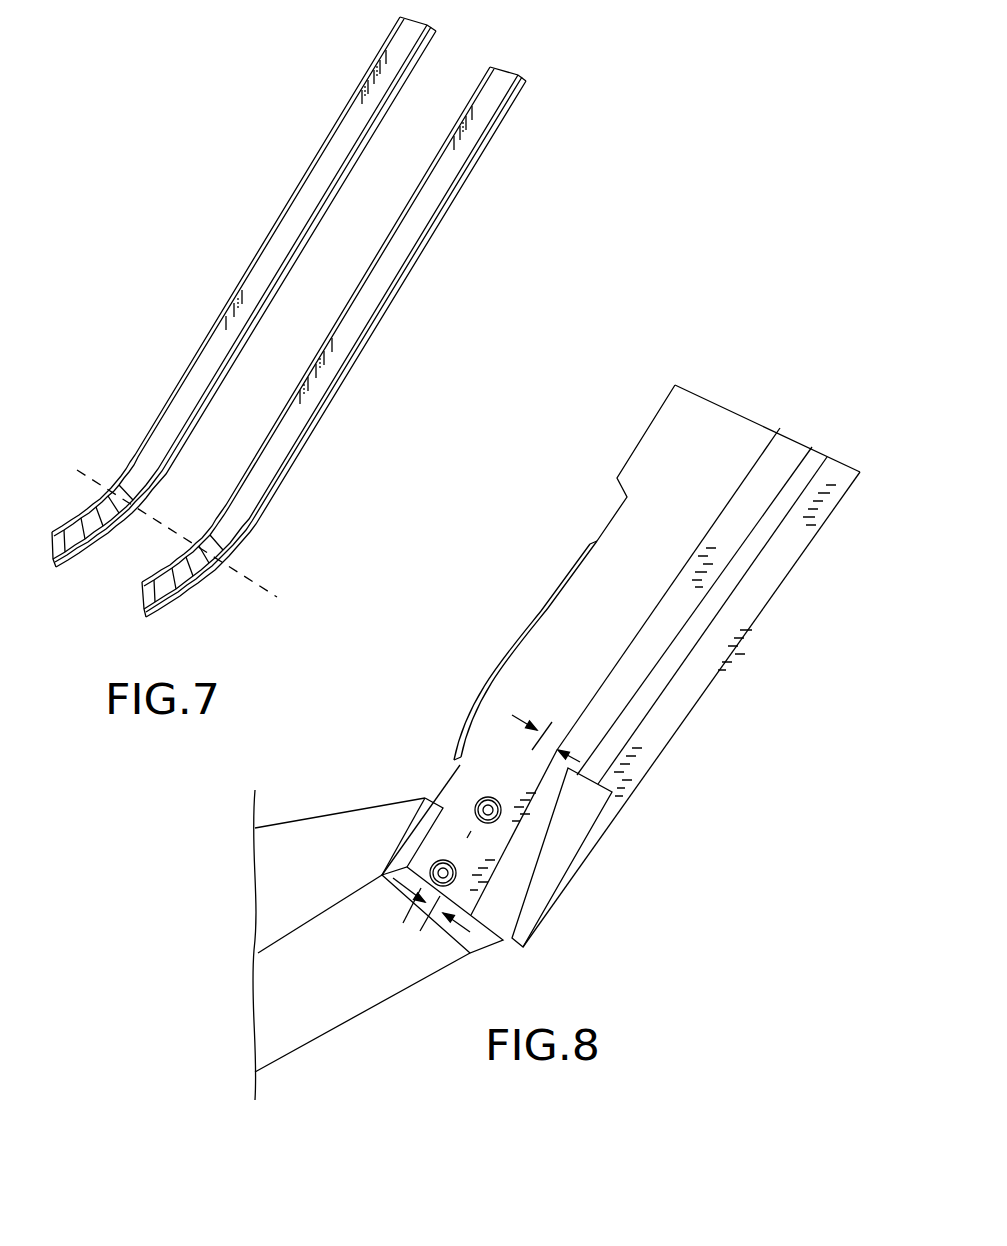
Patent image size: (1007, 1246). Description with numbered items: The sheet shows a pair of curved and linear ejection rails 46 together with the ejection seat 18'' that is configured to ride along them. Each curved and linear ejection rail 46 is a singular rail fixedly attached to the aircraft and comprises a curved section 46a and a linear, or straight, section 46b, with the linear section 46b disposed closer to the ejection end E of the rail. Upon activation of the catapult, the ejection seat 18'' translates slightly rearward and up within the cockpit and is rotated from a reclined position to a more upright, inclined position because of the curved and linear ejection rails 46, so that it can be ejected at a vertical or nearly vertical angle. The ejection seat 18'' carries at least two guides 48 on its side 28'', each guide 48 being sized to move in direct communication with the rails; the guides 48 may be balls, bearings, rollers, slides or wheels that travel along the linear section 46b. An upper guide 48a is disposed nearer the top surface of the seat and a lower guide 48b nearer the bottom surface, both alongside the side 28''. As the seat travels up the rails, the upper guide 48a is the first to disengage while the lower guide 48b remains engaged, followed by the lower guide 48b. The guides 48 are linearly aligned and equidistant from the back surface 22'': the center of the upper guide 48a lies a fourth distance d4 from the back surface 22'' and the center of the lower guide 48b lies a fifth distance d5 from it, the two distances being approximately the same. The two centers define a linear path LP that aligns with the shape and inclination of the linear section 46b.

In FIG. 7, the curved and linear ejection rail 46 is at (390, 52).
In FIG. 7, the curved section 46a is at (62, 530).
In FIG. 7, the linear section 46b is at (245, 268).
In FIG. 7, the ejection end E is at (328, 128).
In FIG. 8, the side 28'' is at (621, 666).
In FIG. 8, the back surface 22'' is at (789, 577).
In FIG. 8, the ejection seat 18'' is at (361, 945).
In FIG. 8, the guide 48 is at (433, 762).
In FIG. 8, the upper guide 48a is at (490, 796).
In FIG. 8, the lower guide 48b is at (432, 868).
In FIG. 8, the linear path LP is at (458, 852).
In FIG. 8, the fourth distance d4 is at (536, 725).
In FIG. 8, the fifth distance d5 is at (457, 937).